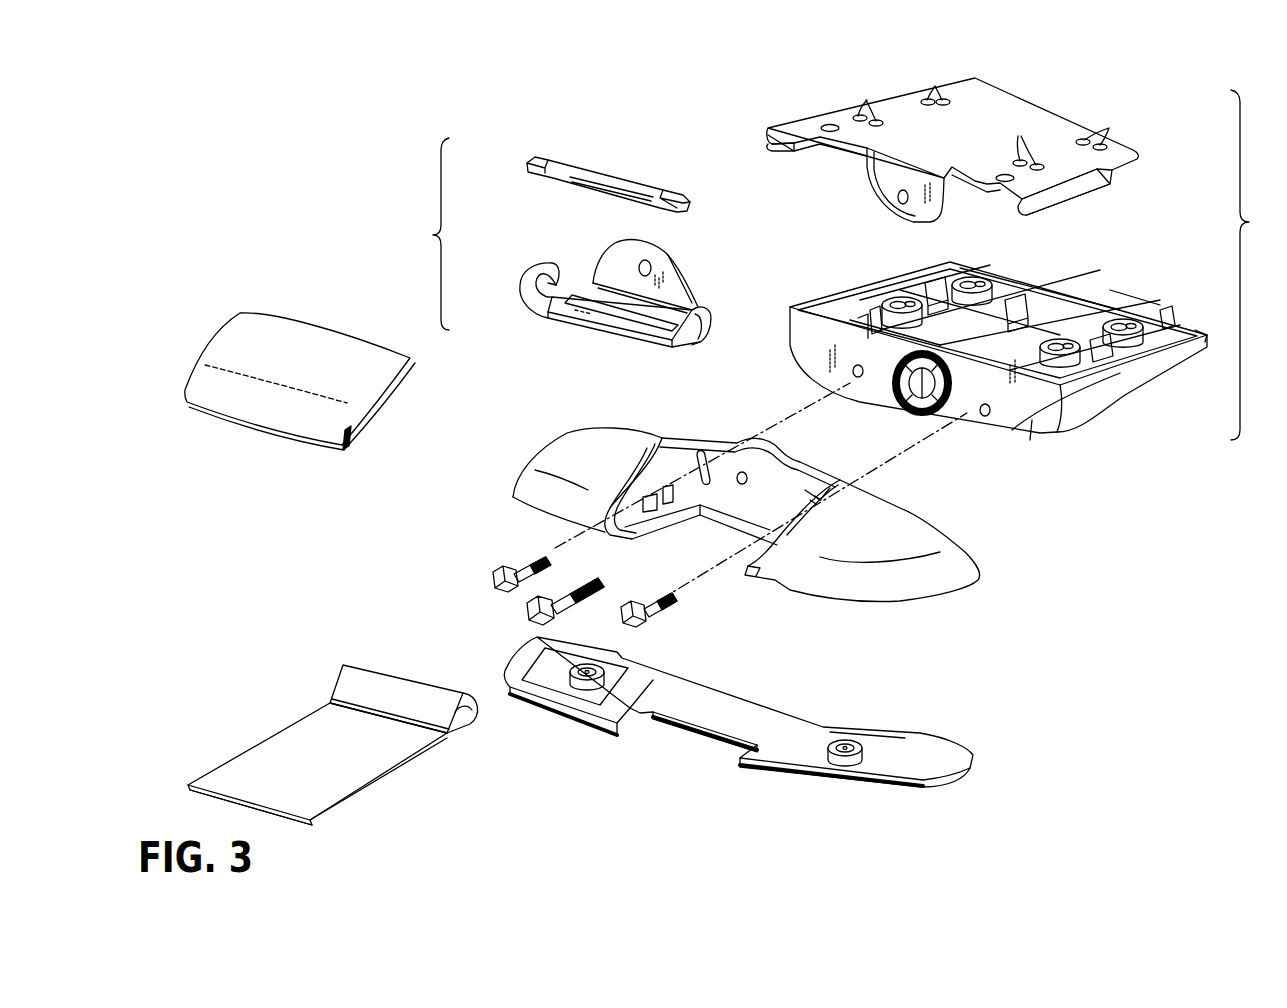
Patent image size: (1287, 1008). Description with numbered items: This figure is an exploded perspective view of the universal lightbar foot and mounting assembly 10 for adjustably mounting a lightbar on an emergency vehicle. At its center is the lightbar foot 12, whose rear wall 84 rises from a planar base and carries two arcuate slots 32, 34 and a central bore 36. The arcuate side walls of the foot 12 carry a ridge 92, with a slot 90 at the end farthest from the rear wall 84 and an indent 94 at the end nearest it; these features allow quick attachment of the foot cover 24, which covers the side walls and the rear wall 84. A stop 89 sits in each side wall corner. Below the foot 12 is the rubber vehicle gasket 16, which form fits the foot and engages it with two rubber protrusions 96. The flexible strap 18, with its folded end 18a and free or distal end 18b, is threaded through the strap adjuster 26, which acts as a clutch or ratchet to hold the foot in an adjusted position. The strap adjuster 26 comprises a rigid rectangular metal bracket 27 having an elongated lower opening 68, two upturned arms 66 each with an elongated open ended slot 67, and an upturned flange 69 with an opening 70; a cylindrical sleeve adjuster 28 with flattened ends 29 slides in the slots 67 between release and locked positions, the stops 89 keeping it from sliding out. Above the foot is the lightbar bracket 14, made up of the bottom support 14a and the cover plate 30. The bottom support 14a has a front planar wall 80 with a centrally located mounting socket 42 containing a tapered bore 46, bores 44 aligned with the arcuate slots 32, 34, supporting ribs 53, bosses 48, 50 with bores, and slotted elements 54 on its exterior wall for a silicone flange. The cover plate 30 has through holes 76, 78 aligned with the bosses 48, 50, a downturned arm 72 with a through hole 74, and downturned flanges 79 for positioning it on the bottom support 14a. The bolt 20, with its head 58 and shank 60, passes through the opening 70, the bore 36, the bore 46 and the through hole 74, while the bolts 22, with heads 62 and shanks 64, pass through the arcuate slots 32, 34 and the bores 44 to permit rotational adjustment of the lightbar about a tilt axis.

The universal lightbar foot and mounting assembly 10 is at (188, 214).
The lightbar foot 12 is at (711, 487).
The lightbar bracket 14 is at (1012, 294).
The lightbar bottom support 14a is at (1216, 330).
The vehicle gasket 16 is at (738, 748).
The flexible strap 18 is at (318, 740).
The strap folded end 18a is at (363, 692).
The free or distal end of the strap 18b is at (242, 800).
The bolt 20 is at (548, 606).
The bolts 22 is at (575, 582).
The foot cover 24 is at (245, 340).
The strap adjuster 26 is at (420, 234).
The rigid rectangular metal bracket 27 is at (607, 293).
The sleeve adjuster 28 is at (560, 173).
The flattened ends 29 is at (544, 160).
The cover plate 30 is at (942, 124).
The arcuate slot 32 is at (700, 448).
The arcuate slot 34 is at (810, 498).
The bore 36 is at (742, 472).
The mounting socket 42 is at (950, 418).
The bore 44 is at (852, 371).
The tapered bore 46 is at (918, 392).
The bosses 48 is at (832, 312).
The bosses 50 is at (977, 280).
The supporting ribs 53 is at (917, 283).
The slotted elements 54 is at (1165, 310).
The bolt head 58 is at (538, 608).
The shank of bolt 60 is at (600, 586).
The bolt head 62 is at (497, 584).
The shank of bolts 64 is at (535, 565).
The upturned arms 66 is at (521, 282).
The elongated open ended slot 67 is at (550, 284).
The elongated lower opening 68 is at (622, 320).
The upturned flange 69 is at (665, 258).
The opening 70 is at (640, 265).
The downturned arm 72 is at (880, 175).
The through hole 74 is at (897, 200).
The through holes 76 is at (825, 127).
The through holes 78 is at (867, 100).
The downturned flanges 79 is at (768, 135).
The front planar wall 80 is at (1030, 422).
The rear wall 84 is at (778, 478).
The stop 89 is at (600, 453).
The slot 90 is at (592, 526).
The ridge 92 is at (608, 476).
The indent 94 is at (640, 440).
The rubber protrusions 96 is at (585, 680).